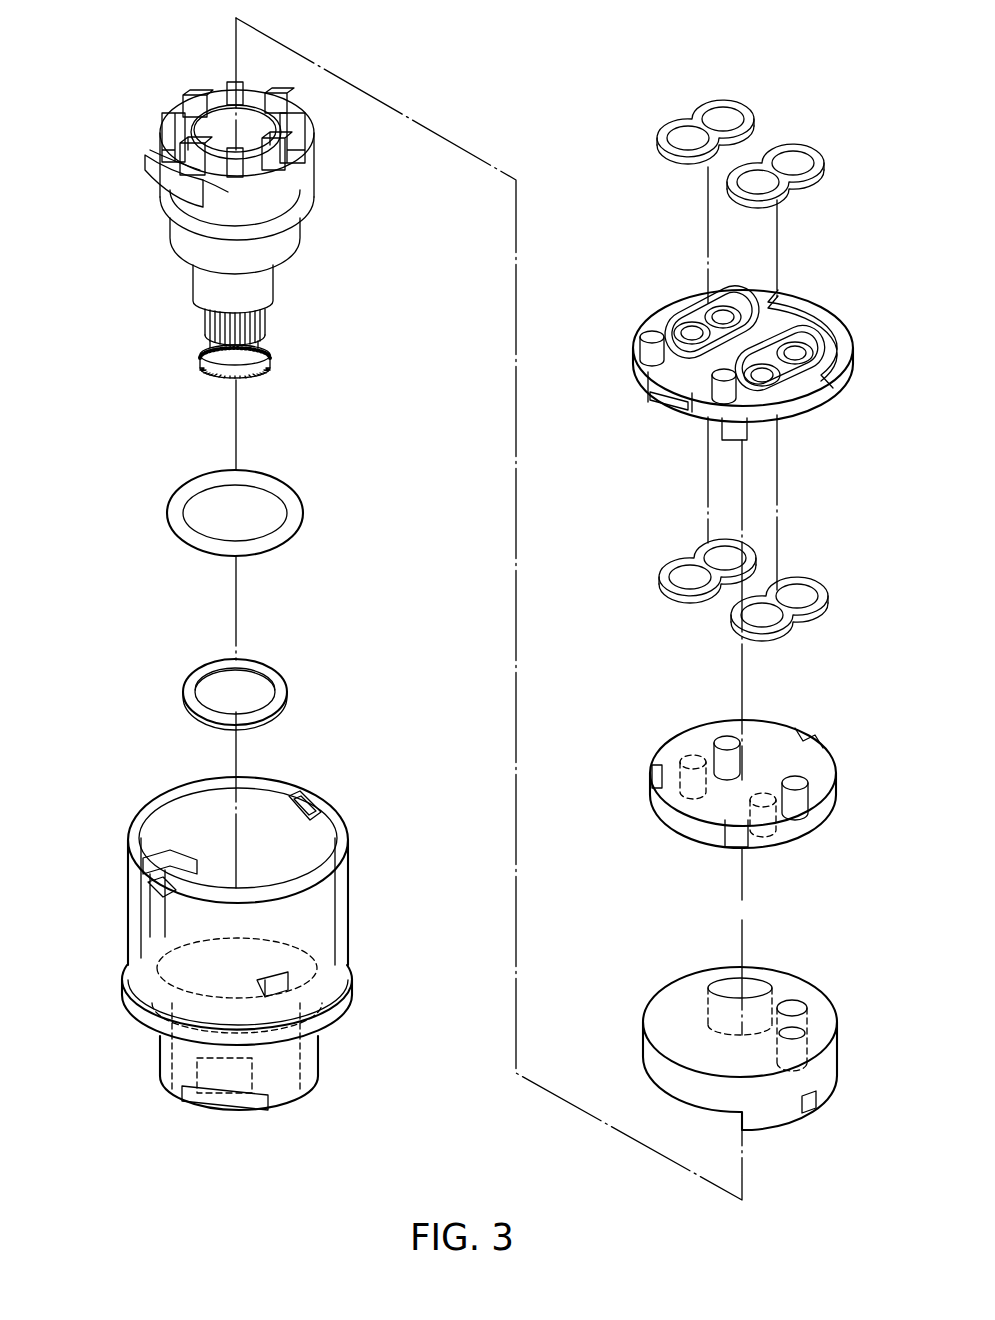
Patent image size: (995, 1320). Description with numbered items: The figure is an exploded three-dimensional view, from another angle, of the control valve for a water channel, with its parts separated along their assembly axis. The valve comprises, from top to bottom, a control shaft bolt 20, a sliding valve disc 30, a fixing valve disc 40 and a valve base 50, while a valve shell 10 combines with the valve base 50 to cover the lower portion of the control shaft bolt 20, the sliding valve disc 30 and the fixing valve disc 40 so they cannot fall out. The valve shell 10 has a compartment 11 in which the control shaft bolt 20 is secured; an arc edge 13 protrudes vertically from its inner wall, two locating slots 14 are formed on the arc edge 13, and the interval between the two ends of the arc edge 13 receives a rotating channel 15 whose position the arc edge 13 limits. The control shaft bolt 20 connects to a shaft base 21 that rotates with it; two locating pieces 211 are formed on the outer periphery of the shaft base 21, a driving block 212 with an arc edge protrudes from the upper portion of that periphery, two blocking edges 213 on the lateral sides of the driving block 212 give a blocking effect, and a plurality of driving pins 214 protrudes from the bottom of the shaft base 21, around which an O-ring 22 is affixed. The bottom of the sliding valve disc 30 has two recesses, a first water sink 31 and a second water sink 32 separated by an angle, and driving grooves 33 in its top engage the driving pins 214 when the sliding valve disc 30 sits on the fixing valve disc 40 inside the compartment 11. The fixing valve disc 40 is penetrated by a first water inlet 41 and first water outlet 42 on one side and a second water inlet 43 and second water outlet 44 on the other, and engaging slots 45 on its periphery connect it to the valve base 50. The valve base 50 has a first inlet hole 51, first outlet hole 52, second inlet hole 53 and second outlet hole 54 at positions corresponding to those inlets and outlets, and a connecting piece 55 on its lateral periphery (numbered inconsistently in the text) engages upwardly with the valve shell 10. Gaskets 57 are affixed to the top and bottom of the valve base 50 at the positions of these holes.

The valve shell 10 is at (244, 934).
The compartment 11 is at (190, 800).
The arc edge 13 is at (357, 898).
The locating slots 14 is at (197, 856).
The rotating channel 15 is at (118, 993).
The control shaft bolt 20 is at (236, 224).
The shaft base 21 is at (236, 152).
The locating pieces 211 is at (296, 198).
The driving block 212 is at (163, 183).
The blocking edges 213 is at (152, 148).
The driving pins 214 is at (195, 93).
The O-ring 22 is at (176, 511).
The sliding valve disc 30 is at (723, 1037).
The first water sink 31 is at (715, 990).
The second water sink 32 is at (798, 1010).
The driving grooves 33 is at (818, 1105).
The fixing valve disc 40 is at (729, 778).
The first water inlet 41 is at (668, 760).
The first water outlet 42 is at (722, 738).
The second water inlet 43 is at (755, 828).
The second water outlet 44 is at (808, 781).
The engaging slots 45 is at (808, 733).
The valve base 50 is at (738, 348).
The first inlet hole 51 is at (680, 328).
The first outlet hole 52 is at (722, 312).
The second inlet hole 53 is at (764, 376).
The second outlet hole 54 is at (812, 358).
The positioning tab 55 is at (663, 404).
The gaskets 57 is at (795, 146).